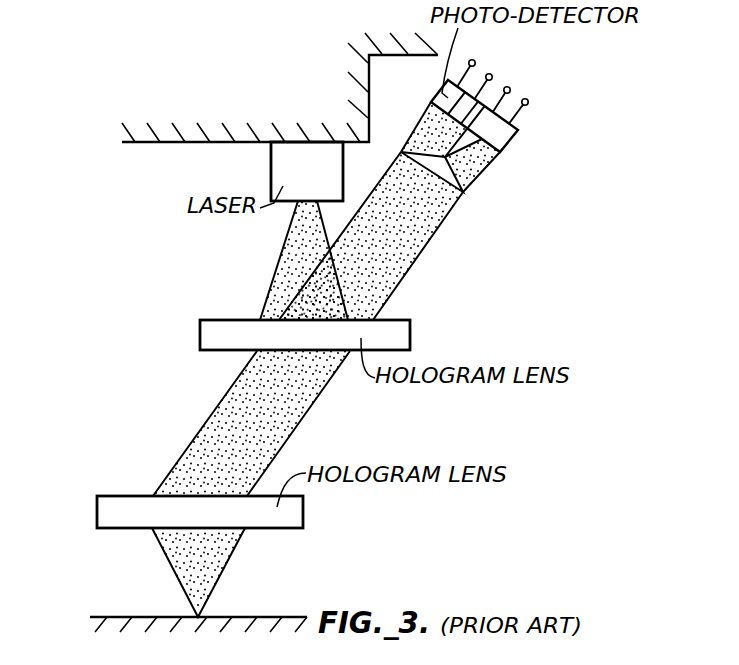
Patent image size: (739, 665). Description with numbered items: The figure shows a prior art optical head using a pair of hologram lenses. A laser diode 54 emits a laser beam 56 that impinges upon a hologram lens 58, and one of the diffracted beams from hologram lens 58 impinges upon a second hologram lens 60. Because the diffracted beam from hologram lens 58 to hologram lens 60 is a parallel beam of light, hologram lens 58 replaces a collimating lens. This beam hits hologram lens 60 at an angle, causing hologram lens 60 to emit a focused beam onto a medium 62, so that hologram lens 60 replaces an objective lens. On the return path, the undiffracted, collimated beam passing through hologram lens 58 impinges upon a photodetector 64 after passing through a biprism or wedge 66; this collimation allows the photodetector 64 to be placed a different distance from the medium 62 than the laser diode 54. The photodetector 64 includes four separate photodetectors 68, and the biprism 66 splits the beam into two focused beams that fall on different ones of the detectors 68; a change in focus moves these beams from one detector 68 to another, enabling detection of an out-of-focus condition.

The laser diode 54 is at (271, 163).
The laser beam 56 is at (277, 254).
The hologram lens 58 is at (200, 338).
The hologram lens 60 is at (97, 514).
The medium 62 is at (288, 616).
The photodetector 64 is at (517, 133).
The biprism or wedge 66 is at (463, 191).
The photodetectors 68 is at (474, 60).